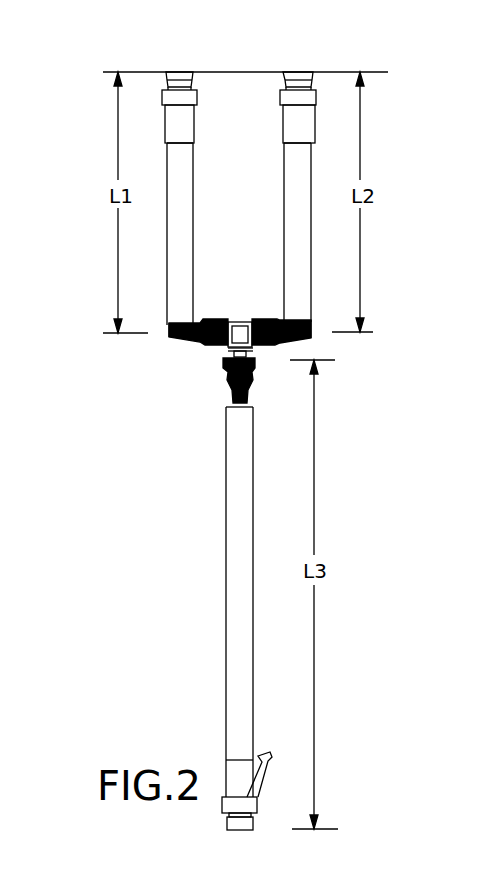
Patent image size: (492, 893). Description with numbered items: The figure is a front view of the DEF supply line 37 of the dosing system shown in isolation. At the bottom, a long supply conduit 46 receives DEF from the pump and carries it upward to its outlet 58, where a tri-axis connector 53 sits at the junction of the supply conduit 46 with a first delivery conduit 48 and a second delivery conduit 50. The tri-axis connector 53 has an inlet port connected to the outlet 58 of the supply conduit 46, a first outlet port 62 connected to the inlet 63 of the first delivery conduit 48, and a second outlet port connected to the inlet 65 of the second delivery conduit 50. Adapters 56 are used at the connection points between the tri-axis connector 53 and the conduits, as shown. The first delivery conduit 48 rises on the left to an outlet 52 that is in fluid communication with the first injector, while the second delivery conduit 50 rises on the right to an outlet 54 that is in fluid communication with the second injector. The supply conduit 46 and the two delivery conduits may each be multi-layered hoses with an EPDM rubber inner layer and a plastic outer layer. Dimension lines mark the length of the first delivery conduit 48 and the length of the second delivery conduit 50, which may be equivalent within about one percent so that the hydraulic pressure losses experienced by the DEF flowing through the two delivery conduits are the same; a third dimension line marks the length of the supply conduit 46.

The DEF supply line 37 is at (398, 121).
The supply conduit 46 is at (230, 573).
The first delivery conduit 48 is at (183, 210).
The second delivery conduit 50 is at (285, 232).
The outlet 52 is at (190, 78).
The outlet 54 is at (310, 78).
The tri-axis connector 53 is at (176, 382).
The adapters 56 is at (262, 320).
The outlet 58 is at (228, 403).
The first outlet port 62 is at (483, 345).
The inlet 63 is at (180, 323).
The inlet 65 is at (304, 322).